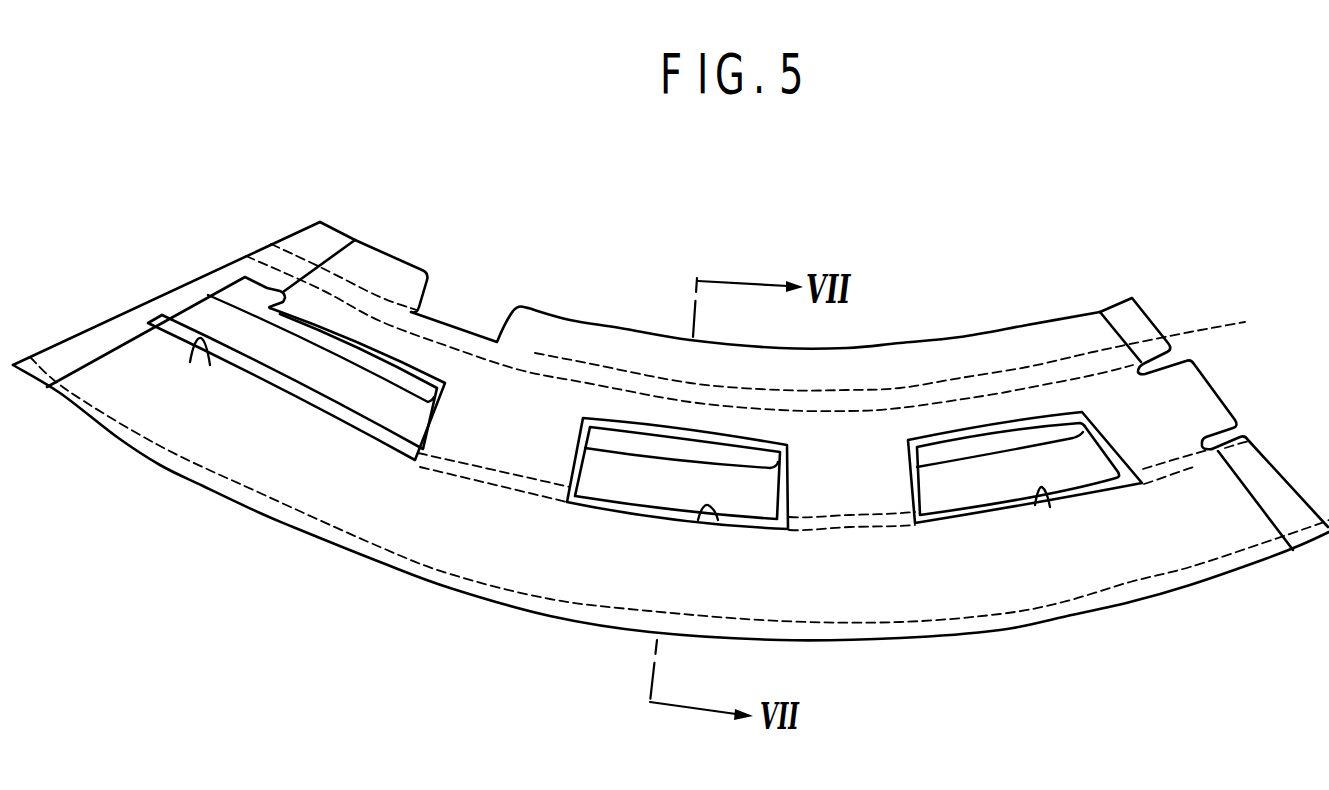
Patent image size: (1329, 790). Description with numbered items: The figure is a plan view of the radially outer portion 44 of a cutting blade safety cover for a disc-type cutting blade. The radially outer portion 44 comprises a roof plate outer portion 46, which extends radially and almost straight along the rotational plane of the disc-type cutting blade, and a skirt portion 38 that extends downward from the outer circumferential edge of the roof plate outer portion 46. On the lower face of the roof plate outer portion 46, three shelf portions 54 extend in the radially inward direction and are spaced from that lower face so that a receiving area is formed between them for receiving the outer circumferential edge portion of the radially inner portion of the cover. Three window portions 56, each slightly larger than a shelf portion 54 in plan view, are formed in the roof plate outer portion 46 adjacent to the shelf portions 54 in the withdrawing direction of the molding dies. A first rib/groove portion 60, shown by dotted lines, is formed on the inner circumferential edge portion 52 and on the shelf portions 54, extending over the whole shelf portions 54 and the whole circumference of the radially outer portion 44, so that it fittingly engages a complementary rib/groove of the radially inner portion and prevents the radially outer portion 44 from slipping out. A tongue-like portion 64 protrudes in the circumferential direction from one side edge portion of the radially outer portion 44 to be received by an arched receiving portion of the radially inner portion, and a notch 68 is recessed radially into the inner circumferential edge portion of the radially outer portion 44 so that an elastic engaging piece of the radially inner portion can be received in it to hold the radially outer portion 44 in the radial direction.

The skirt portion 38 is at (1190, 590).
The radially outer portion 44 is at (671, 436).
The roof plate outer portion 46 is at (862, 423).
The inner circumferential edge portion 52 is at (265, 246).
The shelf portion 54 is at (360, 410).
The window portion 56 is at (190, 362).
The first rib/groove portion 60 is at (538, 358).
The tongue-like portion 64 is at (1217, 428).
The notch 68 is at (445, 323).